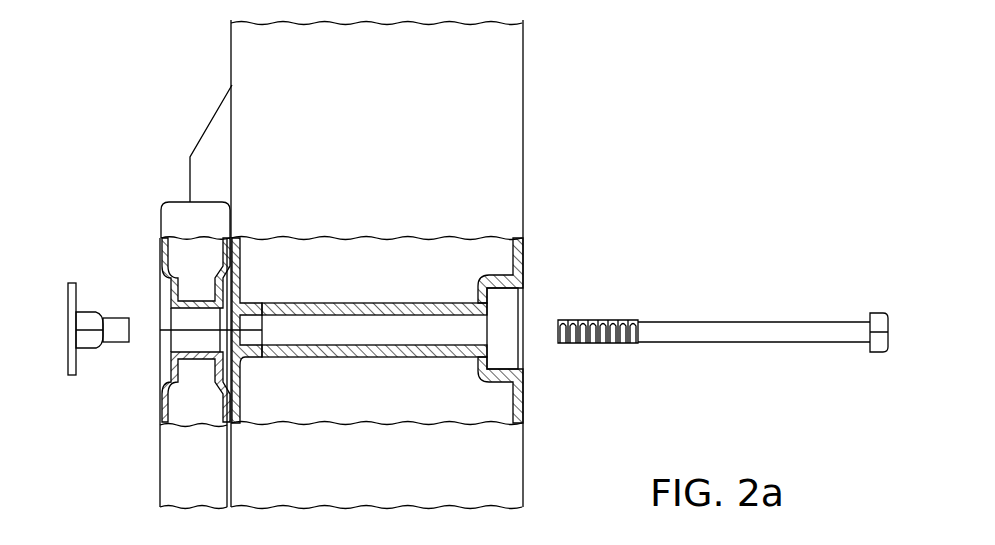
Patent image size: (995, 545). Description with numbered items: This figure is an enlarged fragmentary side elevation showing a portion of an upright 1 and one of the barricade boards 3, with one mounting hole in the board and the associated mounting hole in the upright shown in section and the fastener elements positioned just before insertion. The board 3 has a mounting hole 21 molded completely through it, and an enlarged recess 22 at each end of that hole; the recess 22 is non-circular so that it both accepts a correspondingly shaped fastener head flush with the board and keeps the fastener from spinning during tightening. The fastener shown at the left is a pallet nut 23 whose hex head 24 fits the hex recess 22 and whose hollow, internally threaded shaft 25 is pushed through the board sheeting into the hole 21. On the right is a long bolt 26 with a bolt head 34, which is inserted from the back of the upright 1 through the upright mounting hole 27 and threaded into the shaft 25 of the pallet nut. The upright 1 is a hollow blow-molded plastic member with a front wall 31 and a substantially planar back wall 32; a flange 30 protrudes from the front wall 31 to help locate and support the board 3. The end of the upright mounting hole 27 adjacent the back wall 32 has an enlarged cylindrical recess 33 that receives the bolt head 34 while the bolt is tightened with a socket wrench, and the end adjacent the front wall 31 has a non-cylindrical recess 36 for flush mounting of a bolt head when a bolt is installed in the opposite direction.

The upright 1 is at (556, 61).
The barricade board 3 is at (175, 210).
The mounting hole 21 is at (192, 338).
The recess 22 is at (165, 287).
The pallet nut 23 is at (78, 383).
The hex head 24 is at (70, 350).
The internally threaded shaft 25 is at (98, 350).
The long bolt 26 is at (722, 310).
The upright mounting hole 27 is at (408, 325).
The flange 30 is at (210, 142).
The front wall 31 is at (227, 479).
The back wall 32 is at (522, 455).
The cylindrical recess 33 is at (502, 293).
The bolt head 34 is at (873, 313).
The non-cylindrical recess 36 is at (250, 342).